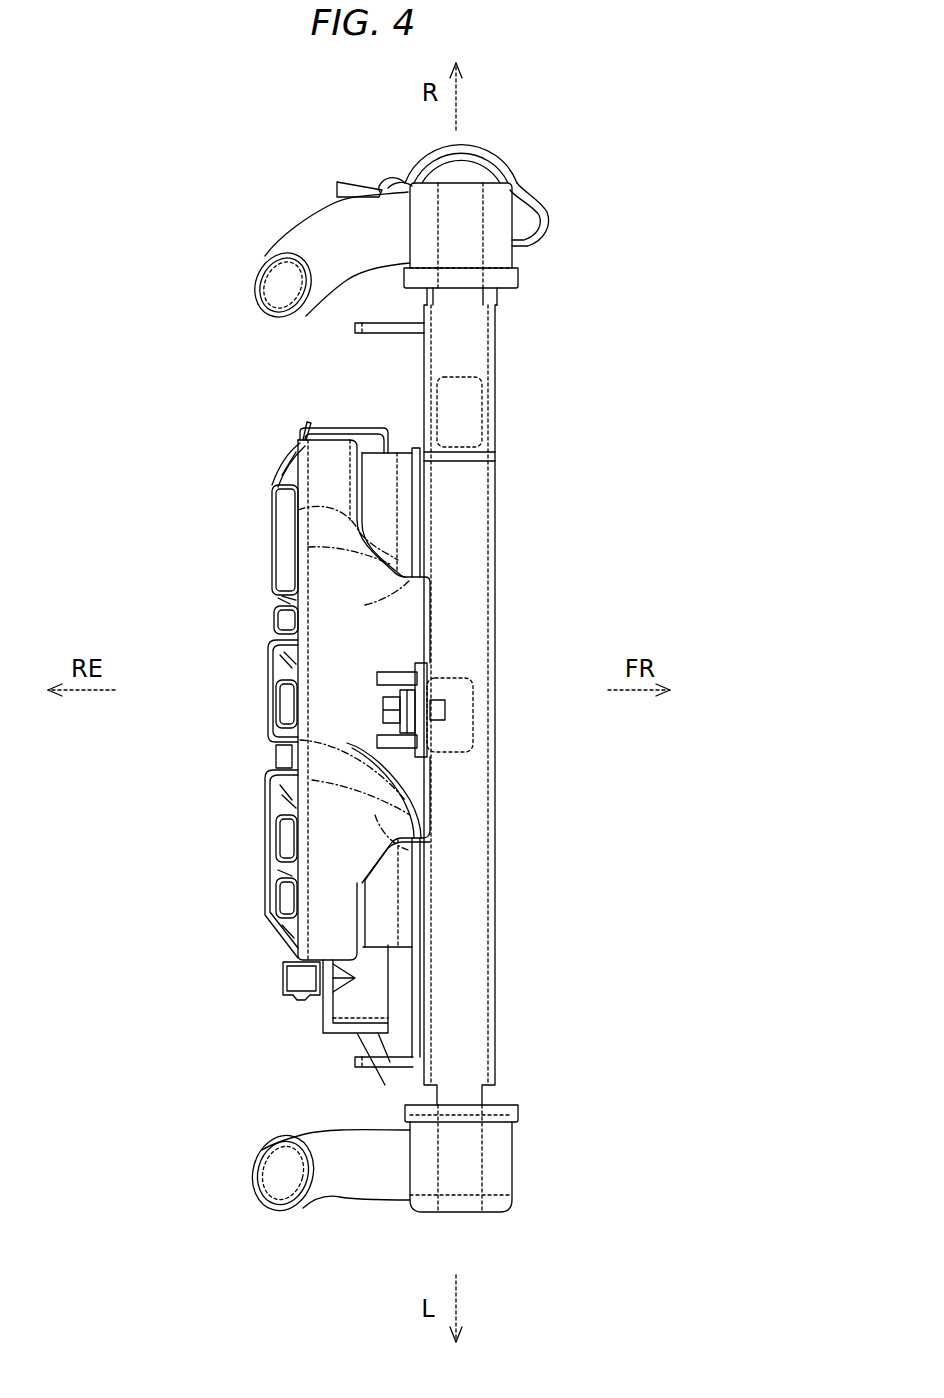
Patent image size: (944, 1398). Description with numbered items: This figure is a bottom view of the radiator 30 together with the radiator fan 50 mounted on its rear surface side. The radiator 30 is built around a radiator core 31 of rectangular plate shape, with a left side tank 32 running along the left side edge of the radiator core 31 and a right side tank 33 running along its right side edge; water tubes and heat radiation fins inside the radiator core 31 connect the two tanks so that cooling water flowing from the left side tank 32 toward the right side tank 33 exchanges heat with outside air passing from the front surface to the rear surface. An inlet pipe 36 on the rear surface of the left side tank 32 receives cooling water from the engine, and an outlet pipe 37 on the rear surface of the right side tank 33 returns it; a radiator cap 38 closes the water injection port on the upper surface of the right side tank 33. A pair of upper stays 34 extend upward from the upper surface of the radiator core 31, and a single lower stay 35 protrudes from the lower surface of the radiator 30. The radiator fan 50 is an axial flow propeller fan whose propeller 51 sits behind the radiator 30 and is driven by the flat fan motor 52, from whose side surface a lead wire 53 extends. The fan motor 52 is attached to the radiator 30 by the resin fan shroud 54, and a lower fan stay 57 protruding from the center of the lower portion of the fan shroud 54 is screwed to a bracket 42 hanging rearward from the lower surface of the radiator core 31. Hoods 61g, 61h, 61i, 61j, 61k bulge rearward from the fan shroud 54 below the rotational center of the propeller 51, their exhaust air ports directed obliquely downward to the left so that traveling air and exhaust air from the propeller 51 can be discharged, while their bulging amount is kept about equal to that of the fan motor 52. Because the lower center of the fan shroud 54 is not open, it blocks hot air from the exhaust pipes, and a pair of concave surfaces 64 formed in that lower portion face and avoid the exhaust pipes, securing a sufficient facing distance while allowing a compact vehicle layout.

The radiator 30 is at (535, 330).
The radiator core 31 is at (480, 537).
The left side tank 32 is at (500, 1172).
The right side tank 33 is at (500, 252).
The upper stay 34 is at (370, 335).
The lower stay 35 is at (462, 448).
The inlet pipe 36 is at (328, 1193).
The outlet pipe 37 is at (302, 234).
The radiator cap 38 is at (513, 163).
The bracket 42 is at (437, 727).
The radiator fan 50 is at (218, 875).
The propeller 51 is at (390, 923).
The fan motor 52 is at (262, 650).
The lead wire 53 is at (270, 772).
The fan shroud 54 is at (320, 457).
The lower fan stay 57 is at (400, 670).
The hood 61g is at (272, 527).
The hood 61h is at (270, 613).
The hood 61i is at (265, 690).
The hood 61j is at (267, 838).
The hood 61k is at (270, 902).
The concave surface 64 is at (367, 603).